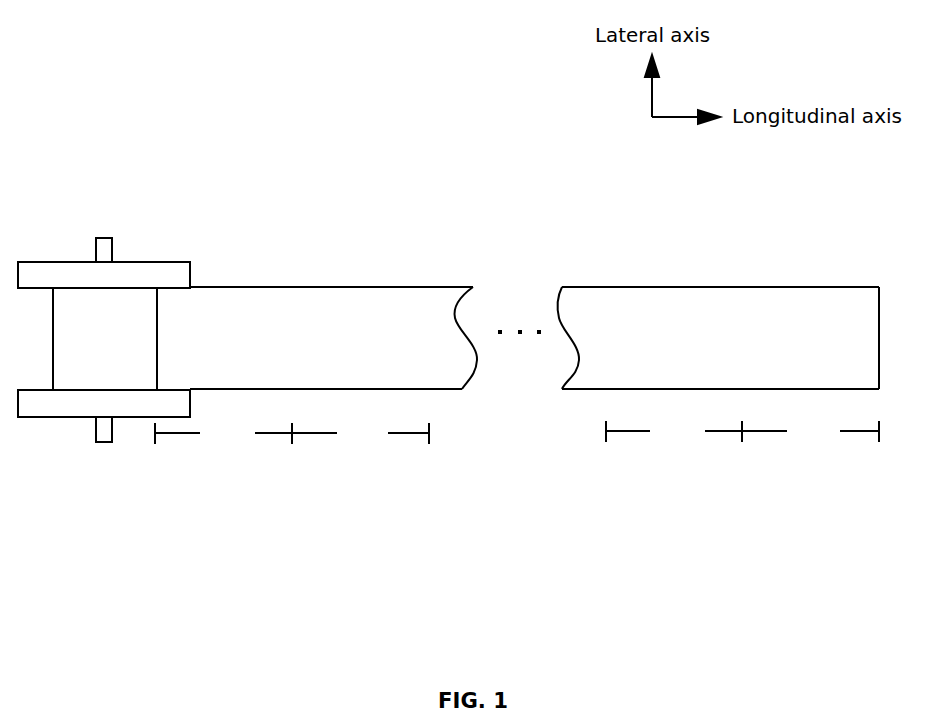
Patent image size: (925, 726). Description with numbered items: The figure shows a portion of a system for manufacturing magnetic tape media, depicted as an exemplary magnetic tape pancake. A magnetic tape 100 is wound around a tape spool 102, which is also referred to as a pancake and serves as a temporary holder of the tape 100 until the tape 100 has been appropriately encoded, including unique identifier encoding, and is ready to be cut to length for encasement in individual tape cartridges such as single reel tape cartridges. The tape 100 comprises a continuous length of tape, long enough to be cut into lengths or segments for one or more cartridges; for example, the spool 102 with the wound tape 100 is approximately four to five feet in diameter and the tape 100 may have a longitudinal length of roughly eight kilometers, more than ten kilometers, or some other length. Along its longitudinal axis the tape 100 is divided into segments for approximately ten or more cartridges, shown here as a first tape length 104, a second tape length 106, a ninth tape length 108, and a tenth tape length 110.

The magnetic tape 100 is at (310, 287).
The tape spool 102 is at (70, 260).
The first tape length 104 is at (805, 498).
The second tape length 106 is at (670, 502).
The ninth tape length 108 is at (355, 502).
The tenth tape length 110 is at (208, 505).